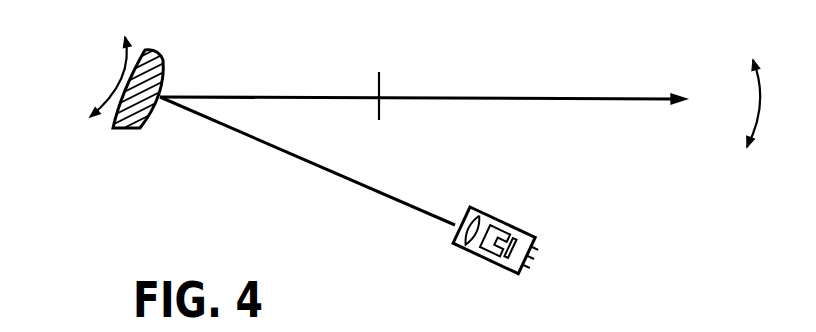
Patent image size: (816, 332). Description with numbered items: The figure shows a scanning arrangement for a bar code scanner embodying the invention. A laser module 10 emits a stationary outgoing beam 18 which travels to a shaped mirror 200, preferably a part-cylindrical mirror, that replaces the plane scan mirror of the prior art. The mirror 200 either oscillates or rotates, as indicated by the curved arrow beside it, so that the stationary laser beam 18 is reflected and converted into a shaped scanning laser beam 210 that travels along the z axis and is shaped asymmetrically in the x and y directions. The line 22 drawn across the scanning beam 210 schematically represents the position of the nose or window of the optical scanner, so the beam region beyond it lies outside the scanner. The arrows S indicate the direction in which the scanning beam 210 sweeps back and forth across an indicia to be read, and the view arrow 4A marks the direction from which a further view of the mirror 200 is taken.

The laser module 10 is at (461, 262).
The outgoing beam 18 is at (312, 162).
The line representing the nose or window of the optical scanner 22 is at (380, 84).
The shaped mirror 200 is at (138, 131).
The shaped scanning laser beam 210 is at (532, 97).
The view direction for FIG. 4A is at (108, 73).
The arrows indicating scanning direction S is at (760, 97).